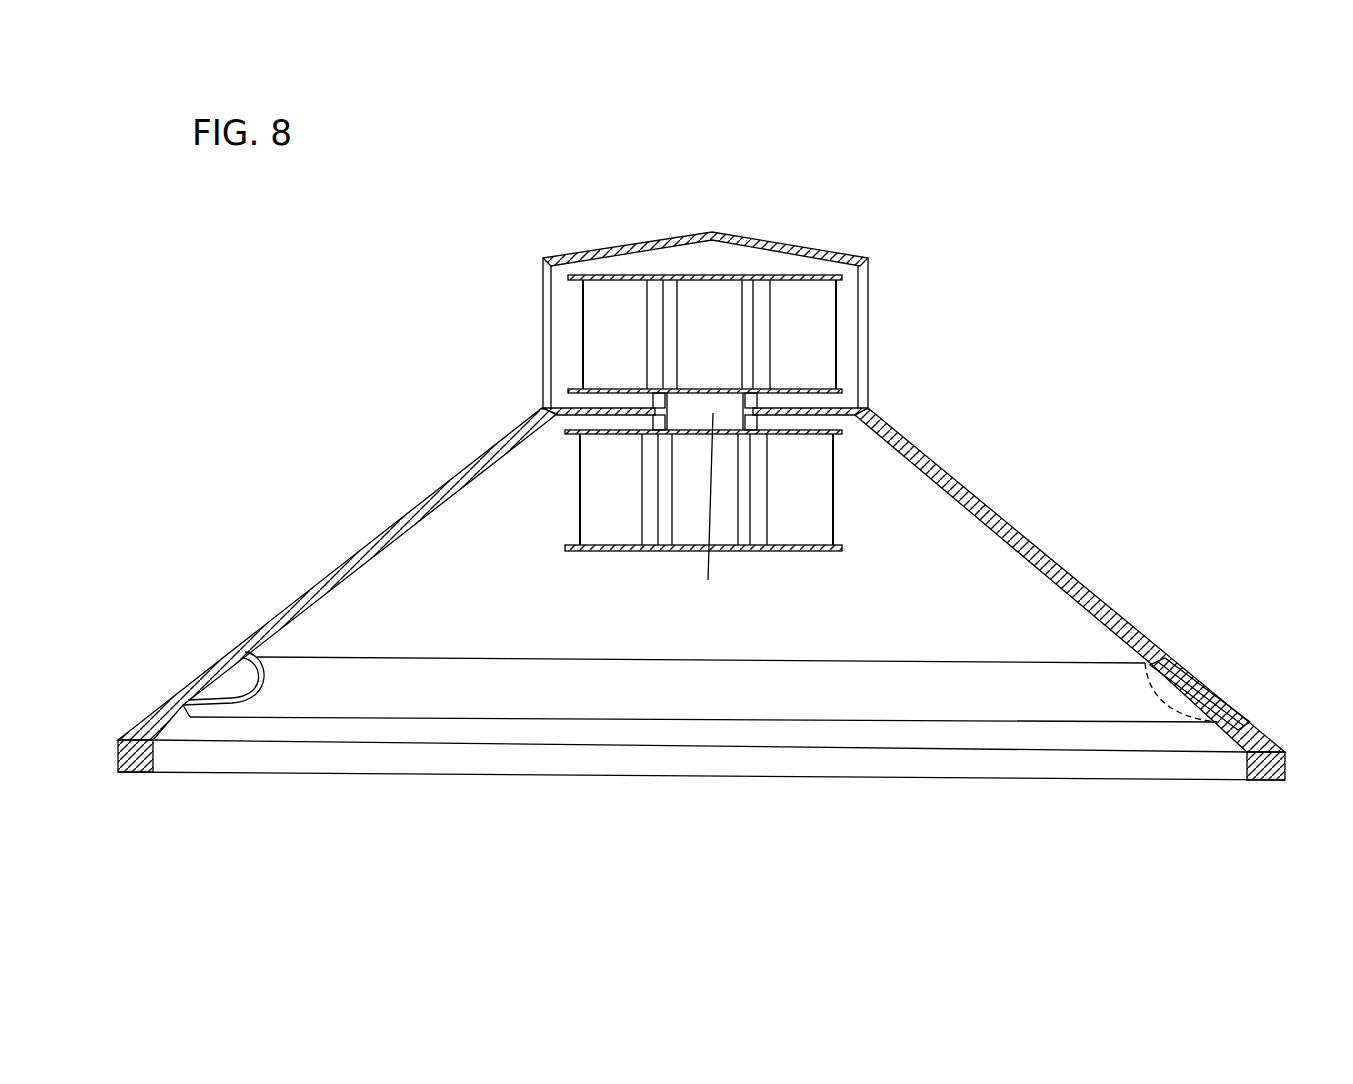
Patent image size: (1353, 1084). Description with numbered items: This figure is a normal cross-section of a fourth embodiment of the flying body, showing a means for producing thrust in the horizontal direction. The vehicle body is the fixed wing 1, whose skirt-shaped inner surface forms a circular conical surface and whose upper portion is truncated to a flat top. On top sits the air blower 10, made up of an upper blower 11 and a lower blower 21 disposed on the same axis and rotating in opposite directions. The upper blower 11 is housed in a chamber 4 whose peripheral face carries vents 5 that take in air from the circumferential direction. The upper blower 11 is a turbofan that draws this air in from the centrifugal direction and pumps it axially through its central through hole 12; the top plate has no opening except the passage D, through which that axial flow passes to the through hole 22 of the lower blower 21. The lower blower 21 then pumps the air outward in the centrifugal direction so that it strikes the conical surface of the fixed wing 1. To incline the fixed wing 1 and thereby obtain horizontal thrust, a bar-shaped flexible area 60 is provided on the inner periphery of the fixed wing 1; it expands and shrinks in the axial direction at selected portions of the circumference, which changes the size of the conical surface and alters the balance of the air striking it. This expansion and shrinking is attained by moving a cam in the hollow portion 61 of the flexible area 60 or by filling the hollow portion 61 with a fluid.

The fixed wing 1 is at (1040, 548).
The chamber 4 is at (768, 245).
The vents 5 is at (542, 325).
The air blower 10 is at (705, 296).
The upper blower 11 is at (597, 350).
The through hole 12 is at (707, 388).
The lower blower 21 is at (577, 472).
The through hole 22 is at (692, 438).
The flexible area 60 is at (300, 703).
The hollow portion 61 is at (220, 682).
The passage D is at (708, 517).